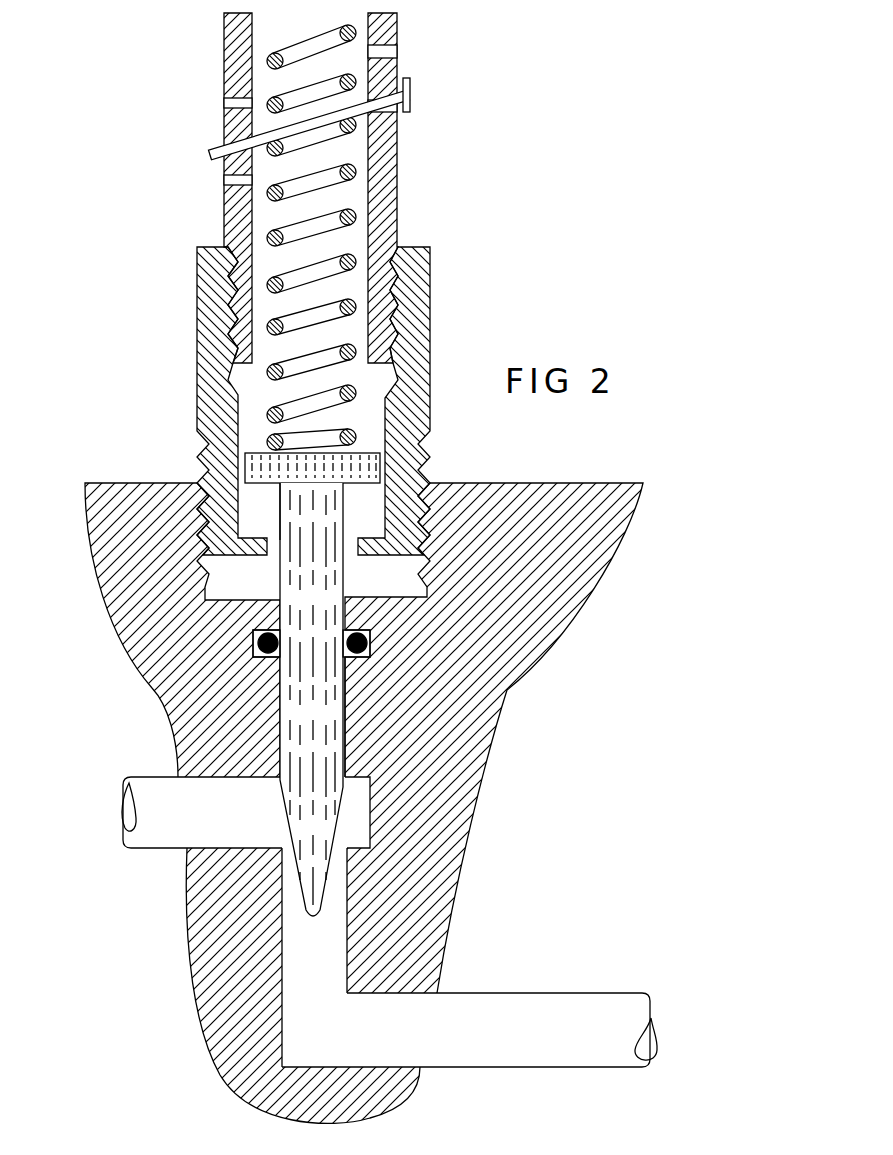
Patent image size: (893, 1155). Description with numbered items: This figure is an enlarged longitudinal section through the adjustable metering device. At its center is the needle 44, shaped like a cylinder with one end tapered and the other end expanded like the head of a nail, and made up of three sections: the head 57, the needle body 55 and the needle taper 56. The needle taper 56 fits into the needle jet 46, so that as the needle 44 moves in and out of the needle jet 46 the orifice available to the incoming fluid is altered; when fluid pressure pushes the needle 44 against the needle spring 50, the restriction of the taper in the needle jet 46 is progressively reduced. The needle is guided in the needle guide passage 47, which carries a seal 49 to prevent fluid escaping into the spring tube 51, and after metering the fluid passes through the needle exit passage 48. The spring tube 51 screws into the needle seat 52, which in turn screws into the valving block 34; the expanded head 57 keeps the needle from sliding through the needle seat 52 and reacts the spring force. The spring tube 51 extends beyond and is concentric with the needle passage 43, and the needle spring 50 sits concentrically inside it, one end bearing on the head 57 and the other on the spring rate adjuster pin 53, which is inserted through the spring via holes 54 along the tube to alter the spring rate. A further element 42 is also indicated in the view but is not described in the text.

The valving block 34 is at (508, 483).
The outlet conduit 42 is at (497, 992).
The needle passage 43 is at (326, 999).
The needle 44 is at (358, 517).
The needle jet 46 is at (347, 867).
The needle guide passage 47 is at (347, 727).
The needle exit passage 48 is at (170, 828).
The seal 49 is at (258, 641).
The needle spring 50 is at (340, 172).
The spring tube 51 is at (224, 77).
The needle seat 52 is at (430, 268).
The spring rate adjuster pin 53 is at (410, 92).
The holes 54 is at (398, 45).
The needle body 55 is at (280, 512).
The needle taper 56 is at (306, 921).
The head 57 is at (262, 450).